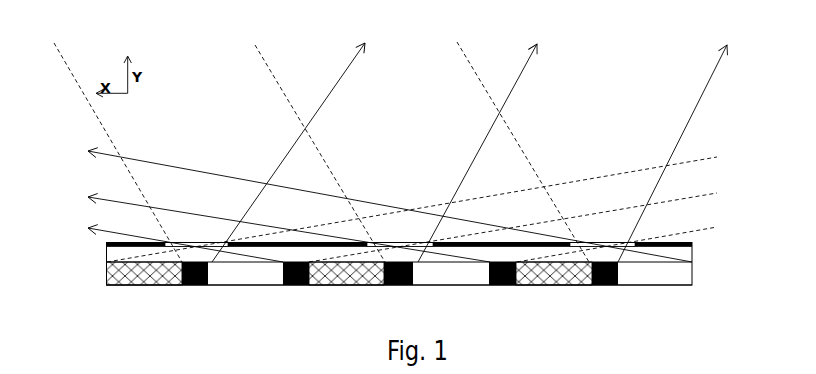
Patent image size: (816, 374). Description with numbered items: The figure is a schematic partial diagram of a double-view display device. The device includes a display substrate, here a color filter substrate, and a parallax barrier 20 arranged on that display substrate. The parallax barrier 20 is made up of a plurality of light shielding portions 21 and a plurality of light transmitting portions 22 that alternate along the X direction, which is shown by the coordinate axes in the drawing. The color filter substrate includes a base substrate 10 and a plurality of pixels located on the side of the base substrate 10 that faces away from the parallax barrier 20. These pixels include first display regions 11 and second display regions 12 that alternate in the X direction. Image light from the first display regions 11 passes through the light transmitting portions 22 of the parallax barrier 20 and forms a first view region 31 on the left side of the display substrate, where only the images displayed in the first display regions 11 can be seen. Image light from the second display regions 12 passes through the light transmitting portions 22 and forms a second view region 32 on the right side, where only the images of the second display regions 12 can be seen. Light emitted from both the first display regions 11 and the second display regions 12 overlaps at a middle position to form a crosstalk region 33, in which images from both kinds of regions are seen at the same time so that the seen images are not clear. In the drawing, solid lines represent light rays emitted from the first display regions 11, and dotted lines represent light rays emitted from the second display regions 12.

The base substrate 10 is at (692, 262).
The first display regions 11 is at (692, 285).
The second display regions 12 is at (556, 284).
The parallax barrier 20 is at (443, 228).
The light shielding portions 21 is at (692, 243).
The light transmitting portions 22 is at (600, 243).
The first view region 31 is at (82, 178).
The second view region 32 is at (706, 185).
The crosstalk region 33 is at (498, 45).